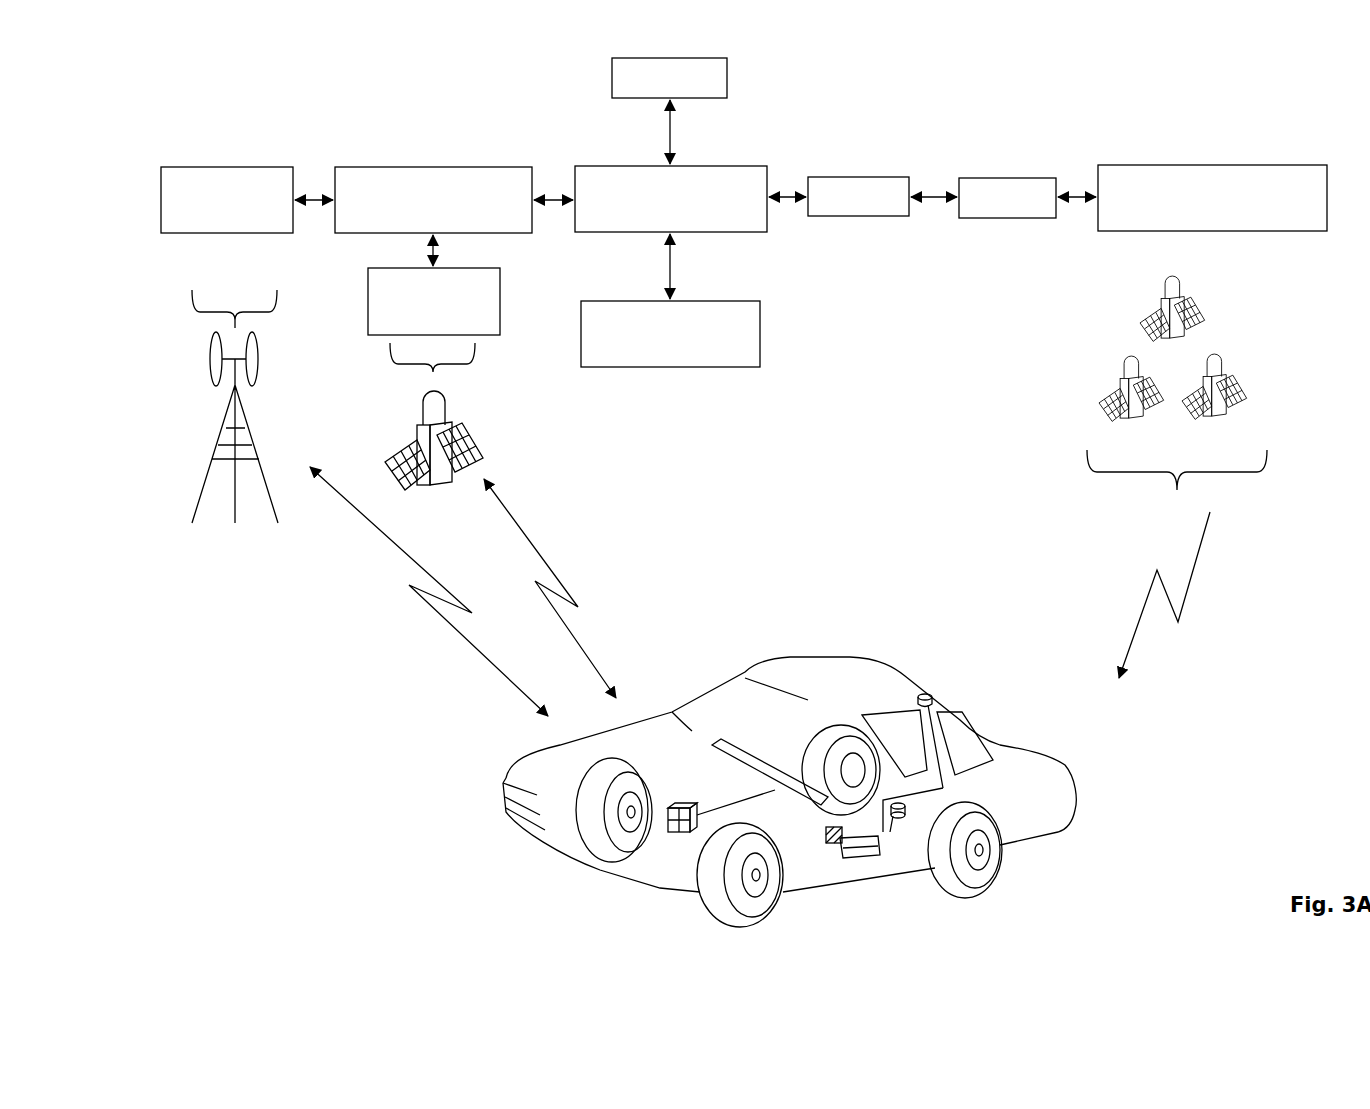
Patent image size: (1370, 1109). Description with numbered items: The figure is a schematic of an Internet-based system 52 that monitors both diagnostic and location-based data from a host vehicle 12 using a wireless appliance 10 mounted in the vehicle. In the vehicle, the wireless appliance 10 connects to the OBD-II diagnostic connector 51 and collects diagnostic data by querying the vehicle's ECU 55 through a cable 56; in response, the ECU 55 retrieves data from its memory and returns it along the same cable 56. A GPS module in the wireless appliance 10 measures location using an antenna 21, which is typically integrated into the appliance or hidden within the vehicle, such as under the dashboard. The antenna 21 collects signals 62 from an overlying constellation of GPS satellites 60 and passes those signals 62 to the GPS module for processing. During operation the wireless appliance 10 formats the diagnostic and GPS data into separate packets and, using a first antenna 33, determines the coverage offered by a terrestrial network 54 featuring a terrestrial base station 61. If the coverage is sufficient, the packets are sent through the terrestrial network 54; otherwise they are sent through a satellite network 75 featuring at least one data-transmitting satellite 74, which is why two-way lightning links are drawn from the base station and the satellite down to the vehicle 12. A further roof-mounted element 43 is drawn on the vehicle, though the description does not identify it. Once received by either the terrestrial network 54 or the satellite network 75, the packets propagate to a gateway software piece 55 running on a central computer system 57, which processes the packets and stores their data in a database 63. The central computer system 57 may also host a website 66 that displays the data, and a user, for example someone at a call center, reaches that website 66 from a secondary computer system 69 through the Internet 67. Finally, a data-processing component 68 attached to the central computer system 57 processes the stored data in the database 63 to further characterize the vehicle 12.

The terrestrial network 54 is at (245, 233).
The gateway software piece 55 is at (380, 165).
The central computer system 57 is at (622, 232).
The database 63 is at (727, 88).
The website 66 is at (857, 216).
The Internet 67 is at (1003, 218).
The secondary computer system 69 is at (1120, 231).
The Internet-based system 52 is at (1078, 146).
The satellite network 75 is at (368, 320).
The data-processing component 68 is at (680, 367).
The terrestrial base station 61 is at (247, 448).
The data-transmitting satellite 74 is at (483, 443).
The constellation of GPS satellites 60 is at (1177, 399).
The signals 62 is at (1190, 570).
The host vehicle 12 is at (1083, 820).
The antenna 43 is at (931, 695).
The first antenna 33 is at (770, 774).
The cable 56 is at (735, 807).
The wireless appliance 10 is at (877, 847).
The OBD-II diagnostic connector 51 is at (822, 837).
The antenna 21 is at (918, 845).